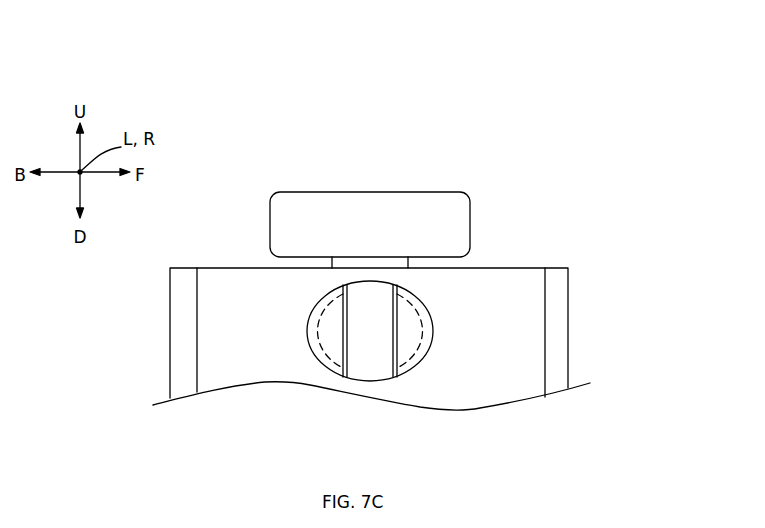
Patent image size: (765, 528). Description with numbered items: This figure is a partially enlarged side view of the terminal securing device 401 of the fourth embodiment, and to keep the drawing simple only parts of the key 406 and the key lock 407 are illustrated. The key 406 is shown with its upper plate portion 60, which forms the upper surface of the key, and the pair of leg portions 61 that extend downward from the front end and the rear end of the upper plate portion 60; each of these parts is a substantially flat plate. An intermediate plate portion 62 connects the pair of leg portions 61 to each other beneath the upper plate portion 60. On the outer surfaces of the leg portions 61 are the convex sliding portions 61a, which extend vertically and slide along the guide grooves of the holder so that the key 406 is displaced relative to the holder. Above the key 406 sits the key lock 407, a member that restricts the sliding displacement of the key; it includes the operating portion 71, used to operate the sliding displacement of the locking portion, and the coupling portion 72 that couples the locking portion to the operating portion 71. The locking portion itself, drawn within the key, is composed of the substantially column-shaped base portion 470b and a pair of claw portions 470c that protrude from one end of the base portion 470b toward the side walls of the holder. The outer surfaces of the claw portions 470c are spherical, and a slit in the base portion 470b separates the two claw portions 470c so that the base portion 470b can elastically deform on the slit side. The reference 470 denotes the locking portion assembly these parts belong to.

The terminal securing device 401 is at (212, 96).
The key 406 is at (590, 232).
The key lock 407 is at (480, 160).
The upper plate portion 60 is at (367, 304).
The leg portions 61 is at (367, 332).
The sliding portions 61a is at (180, 310).
The intermediate plate portion 62 is at (360, 388).
The operating portion 71 is at (383, 203).
The coupling portion 72 is at (338, 263).
The wheel 470 is at (373, 374).
The base portion 470b is at (370, 360).
The claw portions 470c is at (313, 342).